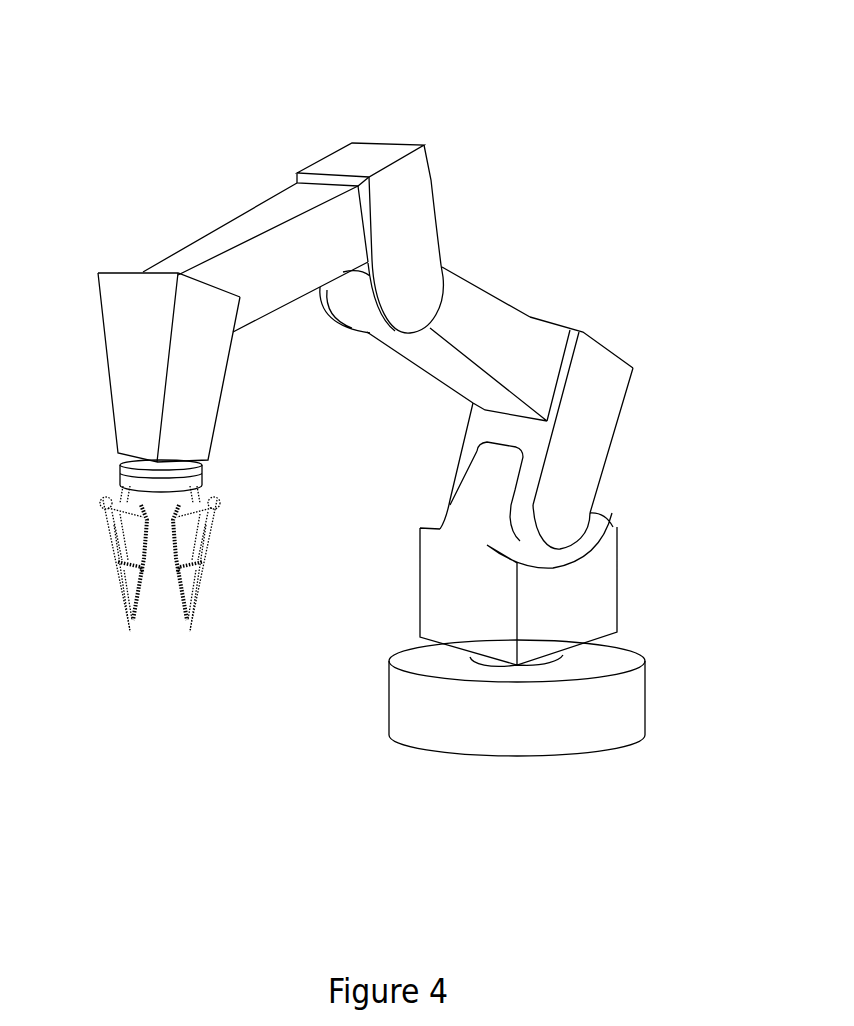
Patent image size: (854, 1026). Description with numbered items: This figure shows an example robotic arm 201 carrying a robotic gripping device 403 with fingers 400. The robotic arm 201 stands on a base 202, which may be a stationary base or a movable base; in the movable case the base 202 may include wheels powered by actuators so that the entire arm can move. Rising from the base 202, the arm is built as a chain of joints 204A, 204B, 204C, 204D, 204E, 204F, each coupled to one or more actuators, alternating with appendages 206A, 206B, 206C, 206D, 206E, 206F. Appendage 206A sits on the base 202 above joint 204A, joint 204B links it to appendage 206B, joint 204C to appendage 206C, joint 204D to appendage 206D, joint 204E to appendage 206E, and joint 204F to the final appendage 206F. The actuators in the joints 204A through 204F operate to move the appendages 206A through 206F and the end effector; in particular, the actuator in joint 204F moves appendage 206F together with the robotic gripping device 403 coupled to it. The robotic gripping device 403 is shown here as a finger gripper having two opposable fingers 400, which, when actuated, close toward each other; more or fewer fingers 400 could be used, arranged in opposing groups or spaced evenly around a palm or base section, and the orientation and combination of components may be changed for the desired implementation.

The robotic arm 201 is at (132, 80).
The base 202 is at (623, 710).
The joint 204A is at (476, 655).
The joint 204B is at (583, 513).
The joint 204C is at (627, 393).
The joint 204D is at (412, 314).
The joint 204E is at (430, 171).
The joint 204F is at (143, 272).
The appendage 206A is at (600, 600).
The appendage 206B is at (603, 447).
The appendage 206C is at (525, 316).
The appendage 206D is at (420, 227).
The appendage 206E is at (250, 222).
The appendage 206F is at (223, 397).
The fingers 400 is at (92, 541).
The robotic gripping device 403 is at (231, 484).